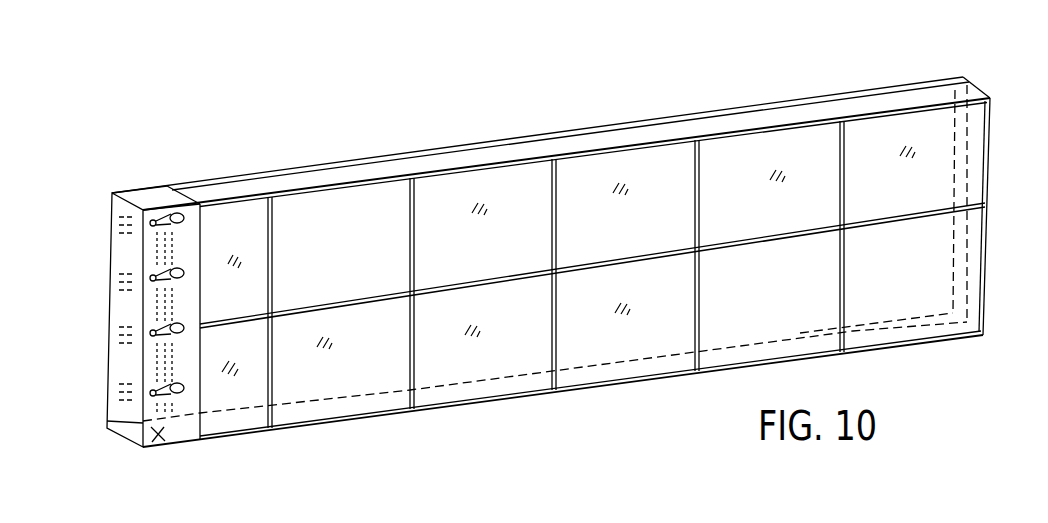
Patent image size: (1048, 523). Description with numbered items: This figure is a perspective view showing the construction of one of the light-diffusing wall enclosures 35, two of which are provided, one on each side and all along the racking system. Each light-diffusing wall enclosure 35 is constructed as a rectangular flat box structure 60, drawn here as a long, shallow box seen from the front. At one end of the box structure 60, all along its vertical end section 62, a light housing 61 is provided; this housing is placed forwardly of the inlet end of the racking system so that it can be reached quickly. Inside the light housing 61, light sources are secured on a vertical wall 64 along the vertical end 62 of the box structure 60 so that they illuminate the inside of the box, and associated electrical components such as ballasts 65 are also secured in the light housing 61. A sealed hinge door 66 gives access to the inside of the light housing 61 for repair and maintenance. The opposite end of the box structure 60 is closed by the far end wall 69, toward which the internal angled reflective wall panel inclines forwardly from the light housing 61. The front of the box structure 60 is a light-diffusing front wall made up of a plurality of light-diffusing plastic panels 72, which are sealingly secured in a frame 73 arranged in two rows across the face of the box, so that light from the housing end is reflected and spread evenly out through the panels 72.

The light-diffusing wall enclosure 35 is at (695, 68).
The box structure 60 is at (498, 165).
The light housing 61 is at (145, 200).
The vertical end section 62 is at (186, 250).
The vertical wall 64 is at (151, 446).
The ballasts 65 is at (108, 268).
The sealed hinge door 66 is at (168, 335).
The far end wall 69 is at (982, 90).
The light-diffusing plastic panels 72 is at (636, 234).
The frame 73 is at (907, 222).